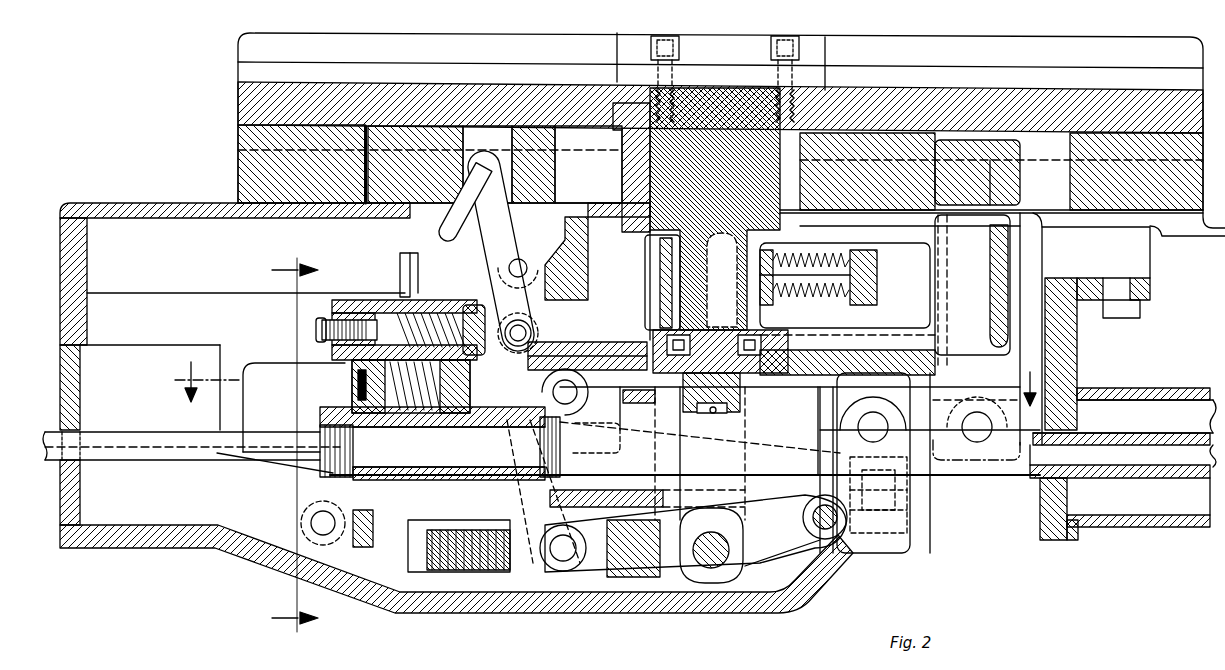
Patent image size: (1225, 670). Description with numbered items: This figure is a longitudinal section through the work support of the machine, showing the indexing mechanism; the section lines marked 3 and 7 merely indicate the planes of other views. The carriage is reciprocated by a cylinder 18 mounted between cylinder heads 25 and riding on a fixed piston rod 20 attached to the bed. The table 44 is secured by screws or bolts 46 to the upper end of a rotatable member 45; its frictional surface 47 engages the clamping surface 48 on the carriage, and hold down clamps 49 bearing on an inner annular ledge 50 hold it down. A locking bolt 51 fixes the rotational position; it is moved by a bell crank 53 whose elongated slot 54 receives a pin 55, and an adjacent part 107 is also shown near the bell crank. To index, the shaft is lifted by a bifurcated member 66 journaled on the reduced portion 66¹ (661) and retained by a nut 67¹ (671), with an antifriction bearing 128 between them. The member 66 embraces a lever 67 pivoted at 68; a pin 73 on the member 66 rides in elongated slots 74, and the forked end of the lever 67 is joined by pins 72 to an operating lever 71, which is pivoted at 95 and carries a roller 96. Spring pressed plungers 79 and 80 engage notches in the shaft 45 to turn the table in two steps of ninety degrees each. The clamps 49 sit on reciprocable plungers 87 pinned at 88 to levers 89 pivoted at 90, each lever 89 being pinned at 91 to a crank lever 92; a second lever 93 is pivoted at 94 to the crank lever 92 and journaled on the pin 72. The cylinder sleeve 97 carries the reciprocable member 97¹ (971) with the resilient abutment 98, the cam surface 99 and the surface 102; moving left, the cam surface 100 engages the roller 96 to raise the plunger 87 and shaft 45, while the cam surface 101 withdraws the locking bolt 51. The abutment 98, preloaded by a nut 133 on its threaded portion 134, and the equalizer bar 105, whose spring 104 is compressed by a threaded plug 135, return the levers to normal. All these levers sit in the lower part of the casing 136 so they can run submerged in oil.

The section line 3- 3 is at (605, 397).
The section line 7- 7 is at (287, 445).
The cylinder 18 is at (1136, 528).
The piston rod 20 is at (1152, 436).
The cylinder heads 25 is at (1056, 541).
The table 44 is at (1192, 55).
The rotatable member 45 is at (705, 108).
The screws or bolts 46 is at (678, 22).
The frictional surface 47 is at (258, 198).
The clamping surface 48 is at (1163, 230).
The hold down clamps 49 is at (1023, 143).
The inner annular ledge 50 is at (1022, 172).
The locking bolt 51 is at (432, 140).
The bell crank 53 is at (500, 247).
The elongated slot 54 is at (447, 222).
The pin 55 is at (497, 165).
The bifurcated member 66 is at (748, 550).
The lever 67 is at (762, 556).
The pivot 68 is at (832, 568).
The reduced portion 661 is at (735, 390).
The nut 671 is at (740, 410).
The operating lever 71 is at (560, 575).
The pins 72 is at (582, 572).
The pin 73 is at (726, 570).
The elongated slots 74 is at (703, 570).
The spring pressed plunger 79 is at (778, 246).
The spring pressed plunger 80 is at (788, 345).
The reciprocable plunger 87 is at (997, 376).
The pins 88 is at (980, 443).
The levers 89 is at (880, 443).
The pivot 90 is at (905, 480).
The pin 91 is at (580, 398).
The crank lever 92 is at (577, 438).
The second lever 93 is at (604, 350).
The pivot 94 is at (530, 452).
The pivot 95 is at (495, 572).
The roller 96 is at (306, 560).
The cylinder sleeve 97 is at (360, 410).
The reciprocable member 971 is at (1126, 480).
The resilient abutment 98 is at (480, 316).
The cam surface 99 is at (373, 530).
The cam surface 100 is at (322, 508).
The cam surface 101 is at (535, 345).
The surface 102 is at (572, 342).
The spring 104 is at (372, 372).
The equalizer bar 105 is at (432, 443).
The stop 107 is at (414, 295).
The antifriction bearing 128 is at (656, 345).
The nut 133 is at (336, 318).
The threaded portion 134 is at (318, 328).
The threaded plug 135 is at (326, 392).
The casing 136 is at (215, 555).